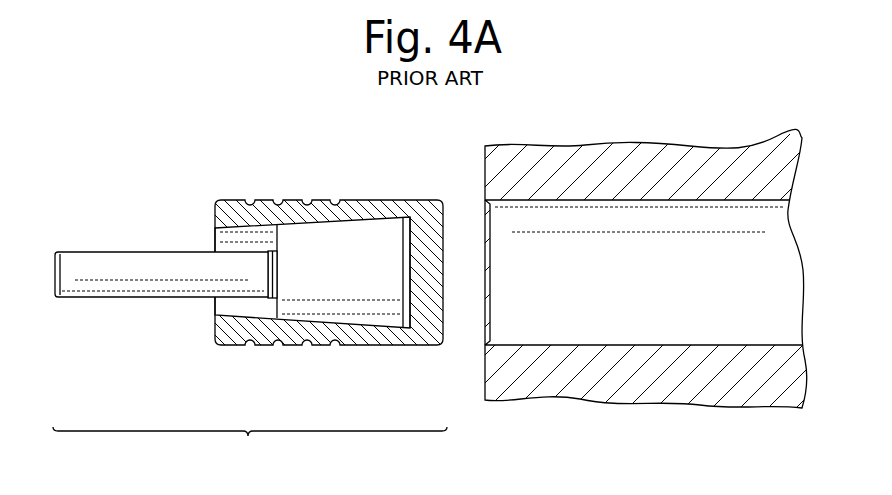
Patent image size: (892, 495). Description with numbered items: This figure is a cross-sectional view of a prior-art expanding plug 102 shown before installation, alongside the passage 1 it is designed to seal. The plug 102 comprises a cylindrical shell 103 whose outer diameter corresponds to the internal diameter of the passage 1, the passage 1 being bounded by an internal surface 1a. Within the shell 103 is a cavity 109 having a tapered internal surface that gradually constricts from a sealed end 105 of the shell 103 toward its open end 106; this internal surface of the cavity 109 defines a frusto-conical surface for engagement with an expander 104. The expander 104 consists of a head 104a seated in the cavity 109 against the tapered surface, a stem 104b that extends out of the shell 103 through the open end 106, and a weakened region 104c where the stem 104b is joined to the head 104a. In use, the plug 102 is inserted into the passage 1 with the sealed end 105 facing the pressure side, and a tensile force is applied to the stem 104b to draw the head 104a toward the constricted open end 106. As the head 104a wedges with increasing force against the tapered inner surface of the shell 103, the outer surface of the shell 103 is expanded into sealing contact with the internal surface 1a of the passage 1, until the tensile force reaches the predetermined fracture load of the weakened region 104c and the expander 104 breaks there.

The passage 1 is at (755, 294).
The internal surface of the passage 1a is at (607, 200).
The expanding plug 102 is at (250, 447).
The cylindrical shell 103 is at (236, 207).
The expander 104 is at (88, 252).
The head 104a is at (322, 247).
The stem 104b is at (107, 296).
The weakened region 104c is at (272, 290).
The sealed end 105 is at (443, 217).
The open end 106 is at (215, 208).
The cavity 109 is at (228, 306).